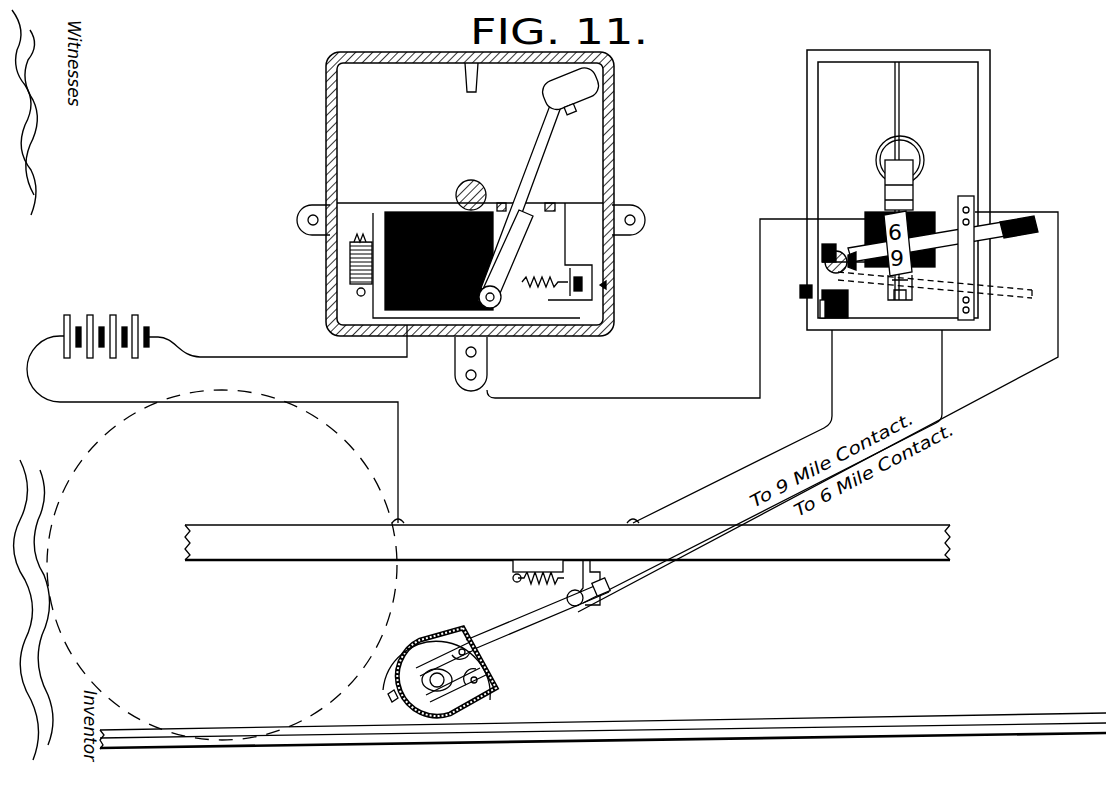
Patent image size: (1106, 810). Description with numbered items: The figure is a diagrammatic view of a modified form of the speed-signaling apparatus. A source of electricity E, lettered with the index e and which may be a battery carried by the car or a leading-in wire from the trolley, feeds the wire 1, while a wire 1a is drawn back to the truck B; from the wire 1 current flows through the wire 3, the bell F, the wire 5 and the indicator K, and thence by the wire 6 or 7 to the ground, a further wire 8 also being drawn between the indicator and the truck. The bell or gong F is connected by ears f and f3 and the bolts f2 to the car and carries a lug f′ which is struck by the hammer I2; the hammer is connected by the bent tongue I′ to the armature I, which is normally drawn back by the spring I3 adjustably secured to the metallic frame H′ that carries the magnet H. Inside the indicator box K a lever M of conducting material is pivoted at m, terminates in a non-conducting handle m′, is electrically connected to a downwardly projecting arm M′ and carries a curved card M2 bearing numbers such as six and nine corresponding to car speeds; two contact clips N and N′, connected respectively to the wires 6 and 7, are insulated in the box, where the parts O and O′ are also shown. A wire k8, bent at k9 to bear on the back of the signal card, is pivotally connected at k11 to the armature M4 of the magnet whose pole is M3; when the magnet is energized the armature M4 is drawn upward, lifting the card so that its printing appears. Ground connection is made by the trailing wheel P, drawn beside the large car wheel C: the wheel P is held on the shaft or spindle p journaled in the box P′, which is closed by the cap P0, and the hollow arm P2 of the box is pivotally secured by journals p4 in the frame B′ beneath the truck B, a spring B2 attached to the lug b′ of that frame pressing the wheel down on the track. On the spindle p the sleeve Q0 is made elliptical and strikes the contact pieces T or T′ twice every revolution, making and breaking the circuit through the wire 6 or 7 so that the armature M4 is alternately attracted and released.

The car wheel C is at (222, 565).
The truck B is at (567, 544).
The source of electricity E is at (106, 319).
The battery cell e is at (117, 284).
The wire 1 is at (278, 333).
The wire 1a is at (215, 429).
The bell F is at (614, 118).
The lug f′ is at (465, 80).
The bolts f2 is at (479, 170).
The ears f is at (312, 235).
The ears f3 is at (487, 355).
The magnet H is at (420, 212).
The metallic frame H′ is at (580, 310).
The armature I is at (540, 245).
The bent tongue I′ is at (558, 175).
The hammer I2 is at (600, 88).
The spring I3 is at (547, 290).
The wire 3 is at (407, 340).
The wire 5 is at (677, 323).
The indicator box K is at (913, 190).
The wire k8 is at (899, 100).
The bend k9 is at (877, 165).
The pivotal connection k11 is at (895, 300).
The lever M is at (985, 232).
The downwardly projecting arm M′ is at (822, 276).
The pivot m is at (826, 255).
The non-conducting handle m′ is at (1036, 228).
The curved card M2 is at (930, 215).
The magnet core M3 is at (868, 222).
The armature M4 is at (912, 280).
The contact clip N is at (974, 300).
The contact clip N′ is at (974, 210).
The contact O is at (802, 298).
The contact O′ is at (822, 310).
The wire 6 is at (648, 580).
The wire 7 is at (1010, 385).
The wire 8 is at (832, 362).
The frame B′ is at (570, 548).
The lug b′ is at (518, 578).
The spring B2 is at (560, 590).
The trailing wheel P is at (496, 690).
The box P′ is at (425, 645).
The cap P0 is at (435, 690).
The hollow arm P2 is at (555, 618).
The shaft p is at (437, 687).
The journals p4 is at (606, 598).
The contact piece T is at (455, 690).
The contact piece T′ is at (446, 655).
The elliptical sleeve Q0 is at (398, 690).